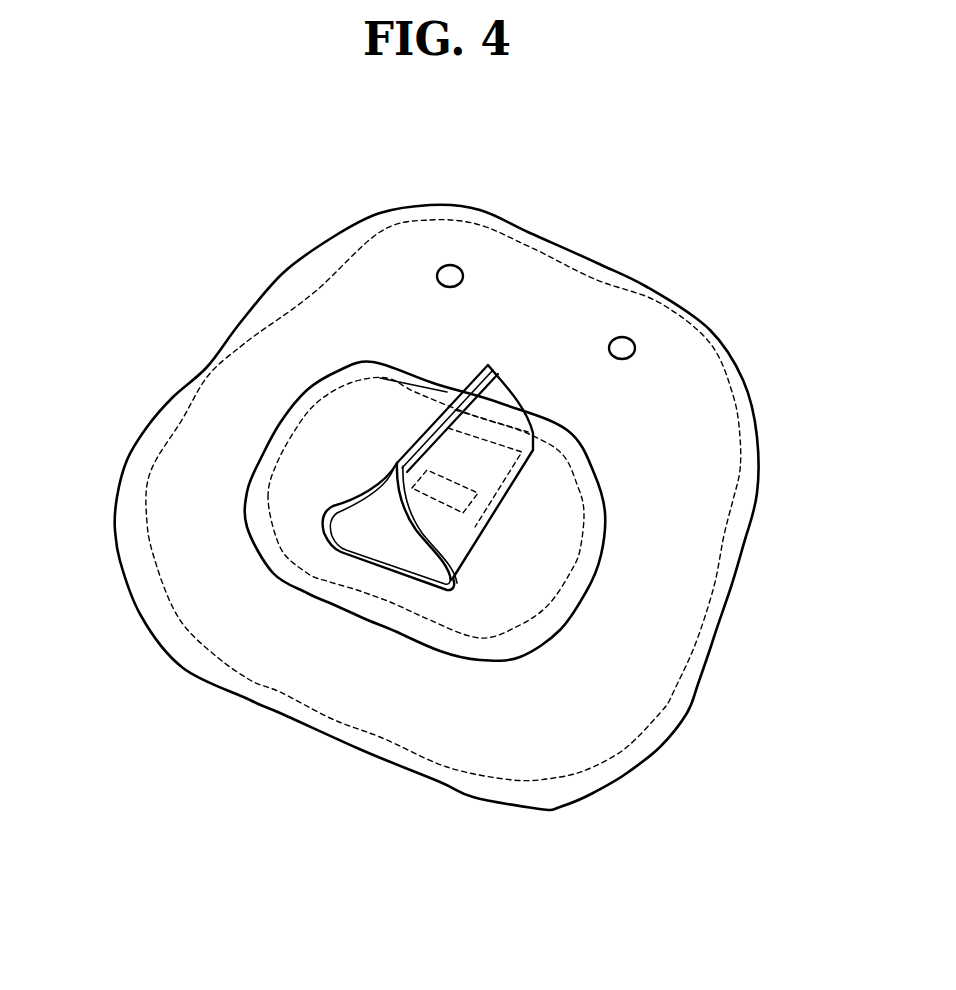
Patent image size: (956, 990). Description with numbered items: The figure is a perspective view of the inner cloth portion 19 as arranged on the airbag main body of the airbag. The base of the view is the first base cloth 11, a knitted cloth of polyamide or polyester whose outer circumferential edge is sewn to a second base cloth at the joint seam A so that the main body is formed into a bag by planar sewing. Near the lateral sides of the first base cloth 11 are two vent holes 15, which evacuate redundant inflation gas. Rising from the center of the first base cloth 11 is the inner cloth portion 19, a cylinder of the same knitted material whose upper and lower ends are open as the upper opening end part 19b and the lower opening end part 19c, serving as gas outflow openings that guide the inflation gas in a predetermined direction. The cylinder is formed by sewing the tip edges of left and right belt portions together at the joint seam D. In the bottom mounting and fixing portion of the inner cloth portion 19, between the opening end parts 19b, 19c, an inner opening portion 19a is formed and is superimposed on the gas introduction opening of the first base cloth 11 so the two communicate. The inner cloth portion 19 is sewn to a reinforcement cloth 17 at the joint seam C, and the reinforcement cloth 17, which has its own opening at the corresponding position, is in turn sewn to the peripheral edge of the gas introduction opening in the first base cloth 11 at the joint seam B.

The first base cloth 11 is at (681, 362).
The vent holes 15 is at (453, 268).
The reinforcement cloth 17 is at (509, 577).
The inner cloth portion 19 is at (371, 397).
The inner opening portion 19a is at (445, 485).
The upper opening end part 19b is at (522, 403).
The lower opening end part 19c is at (350, 488).
The joint seam A is at (263, 685).
The joint seam B is at (313, 575).
The joint seam C is at (430, 583).
The joint seam D is at (451, 438).